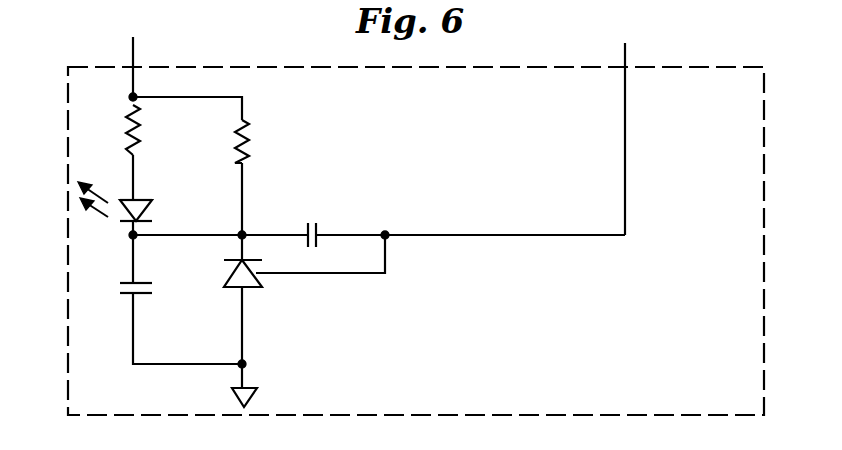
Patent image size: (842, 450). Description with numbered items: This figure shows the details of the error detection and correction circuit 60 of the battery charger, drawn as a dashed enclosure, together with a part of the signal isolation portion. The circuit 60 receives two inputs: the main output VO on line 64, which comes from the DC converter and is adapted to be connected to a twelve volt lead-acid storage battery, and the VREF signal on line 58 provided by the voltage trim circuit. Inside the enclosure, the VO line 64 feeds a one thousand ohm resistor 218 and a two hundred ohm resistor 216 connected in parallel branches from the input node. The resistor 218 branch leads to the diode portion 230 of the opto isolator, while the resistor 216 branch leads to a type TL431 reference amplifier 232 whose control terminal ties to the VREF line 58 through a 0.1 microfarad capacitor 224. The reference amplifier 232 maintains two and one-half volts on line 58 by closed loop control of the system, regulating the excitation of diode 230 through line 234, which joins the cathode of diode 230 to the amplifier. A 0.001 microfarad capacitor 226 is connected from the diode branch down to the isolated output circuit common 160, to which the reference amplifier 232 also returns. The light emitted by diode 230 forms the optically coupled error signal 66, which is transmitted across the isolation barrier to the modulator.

The VREF output line 58 is at (625, 48).
The error detection and correction circuit 60 is at (643, 67).
The main output VO line 64 is at (133, 62).
The error signal 66 is at (98, 207).
The isolated output circuit common 160 is at (242, 375).
The resistor 216 is at (251, 132).
The resistor 218 is at (143, 131).
The capacitor 224 is at (304, 234).
The capacitor 226 is at (133, 296).
The diode portion of opto isolator 230 is at (150, 210).
The reference amplifier 232 is at (232, 284).
The line 234 is at (150, 240).